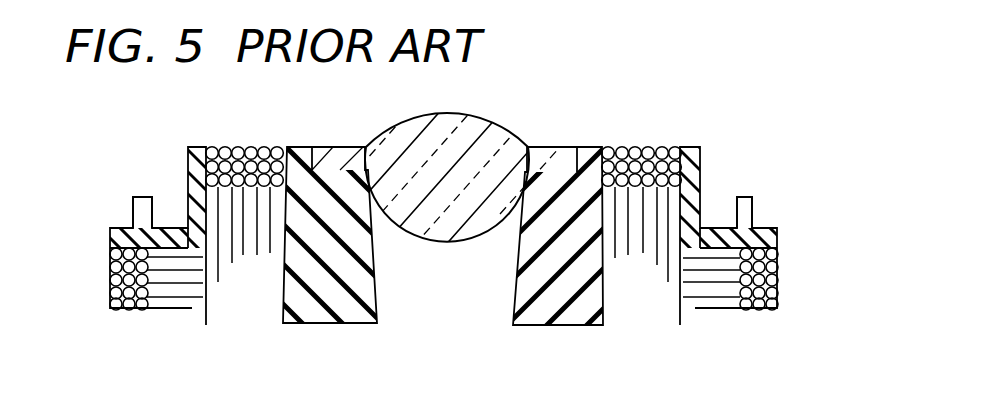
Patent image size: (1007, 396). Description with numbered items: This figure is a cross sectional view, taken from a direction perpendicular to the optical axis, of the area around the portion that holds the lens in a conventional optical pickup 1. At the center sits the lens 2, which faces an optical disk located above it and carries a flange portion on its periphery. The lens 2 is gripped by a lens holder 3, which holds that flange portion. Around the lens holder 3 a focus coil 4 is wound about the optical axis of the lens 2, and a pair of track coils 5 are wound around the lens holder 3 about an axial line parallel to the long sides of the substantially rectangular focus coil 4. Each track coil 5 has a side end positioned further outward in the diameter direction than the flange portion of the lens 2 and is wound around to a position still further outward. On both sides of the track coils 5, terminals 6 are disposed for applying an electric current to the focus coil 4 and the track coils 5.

The optical pickup 1 is at (545, 79).
The lens 2 is at (412, 133).
The lens holder 3 is at (305, 147).
The focus coil 4 is at (127, 310).
The track coil 5 is at (237, 147).
The terminal 6 is at (138, 209).